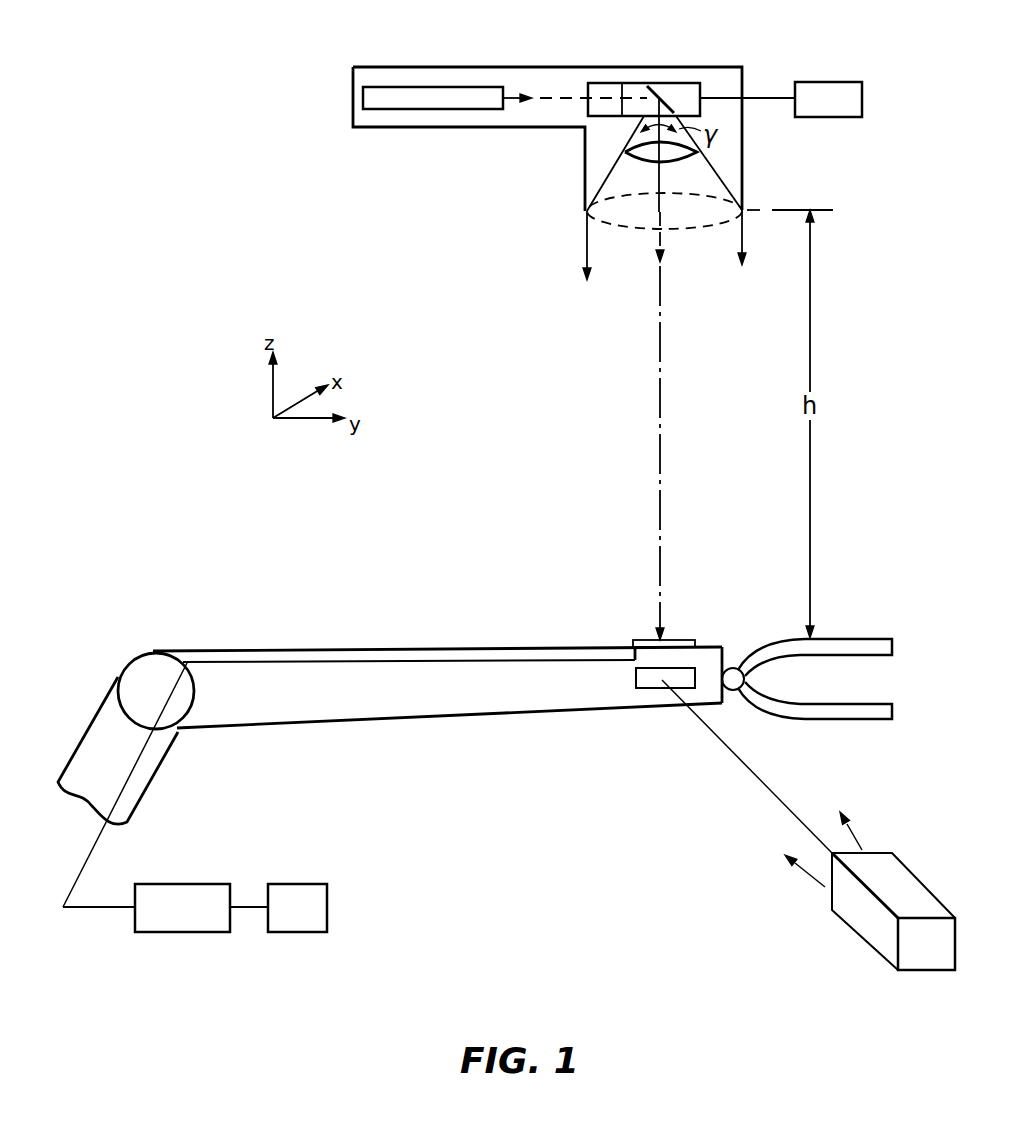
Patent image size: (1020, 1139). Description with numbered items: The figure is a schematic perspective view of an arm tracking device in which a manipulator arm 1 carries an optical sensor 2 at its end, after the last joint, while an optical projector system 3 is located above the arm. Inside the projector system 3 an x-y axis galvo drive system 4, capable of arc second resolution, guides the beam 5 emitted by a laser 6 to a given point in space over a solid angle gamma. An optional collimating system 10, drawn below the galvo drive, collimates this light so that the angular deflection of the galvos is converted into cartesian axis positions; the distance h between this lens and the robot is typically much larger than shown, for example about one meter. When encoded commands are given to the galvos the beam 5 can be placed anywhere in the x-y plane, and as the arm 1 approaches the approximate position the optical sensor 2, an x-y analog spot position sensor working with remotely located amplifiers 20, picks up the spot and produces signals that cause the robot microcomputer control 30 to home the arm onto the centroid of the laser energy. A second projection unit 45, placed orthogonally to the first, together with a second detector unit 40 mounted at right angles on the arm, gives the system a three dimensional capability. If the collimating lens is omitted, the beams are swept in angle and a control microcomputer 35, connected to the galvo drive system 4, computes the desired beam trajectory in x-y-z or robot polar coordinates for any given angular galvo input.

The manipulator arm 1 is at (272, 650).
The optical sensor 2 is at (647, 640).
The optical projector system 3 is at (582, 52).
The x-y axis galvo drive system 4 is at (673, 85).
The beam 5 is at (640, 195).
The laser 6 is at (434, 110).
The collimating system 10 is at (586, 213).
The amplifiers 20 is at (199, 920).
The robot microcomputer control 30 is at (314, 920).
The control microcomputer 35 is at (845, 110).
The second detector unit 40 is at (636, 686).
The second projection unit 45 is at (942, 960).